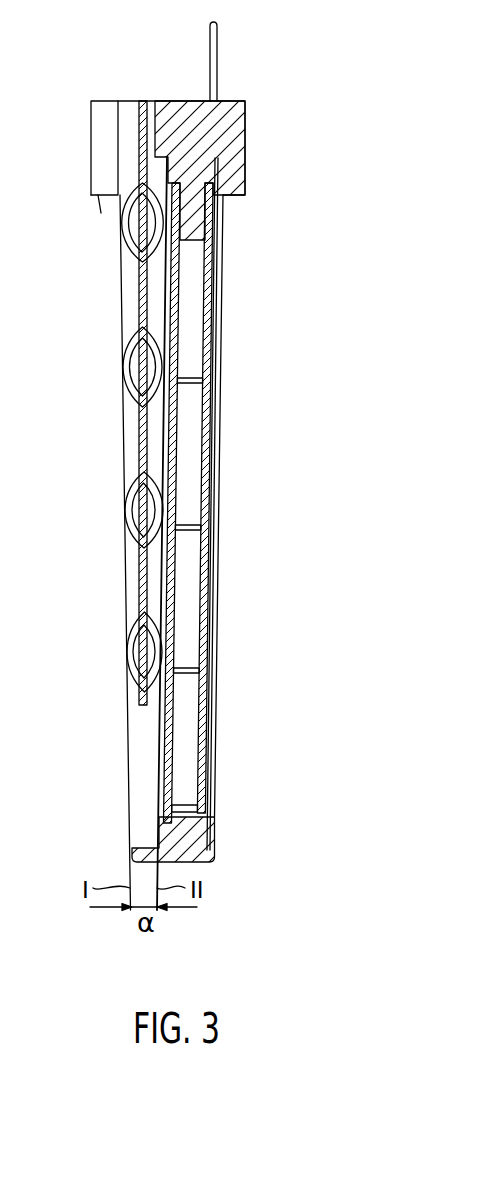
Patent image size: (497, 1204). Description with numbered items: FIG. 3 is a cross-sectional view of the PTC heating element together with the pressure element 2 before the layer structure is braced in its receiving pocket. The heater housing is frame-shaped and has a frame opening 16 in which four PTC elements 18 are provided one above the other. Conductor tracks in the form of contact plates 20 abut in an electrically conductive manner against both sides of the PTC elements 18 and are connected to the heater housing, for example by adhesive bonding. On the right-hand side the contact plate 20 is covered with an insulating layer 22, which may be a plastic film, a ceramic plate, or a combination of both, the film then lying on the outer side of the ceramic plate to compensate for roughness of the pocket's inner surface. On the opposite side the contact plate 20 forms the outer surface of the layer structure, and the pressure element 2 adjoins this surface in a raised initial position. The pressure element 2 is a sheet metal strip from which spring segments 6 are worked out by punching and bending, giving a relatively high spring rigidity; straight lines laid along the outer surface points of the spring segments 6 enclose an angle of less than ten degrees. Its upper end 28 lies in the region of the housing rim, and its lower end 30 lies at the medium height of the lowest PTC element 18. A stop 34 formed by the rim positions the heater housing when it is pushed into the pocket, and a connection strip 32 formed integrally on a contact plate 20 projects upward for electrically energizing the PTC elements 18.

The pressure element 2 is at (132, 95).
The spring segments 6 is at (133, 257).
The frame opening 16 is at (113, 474).
The PTC elements 18 is at (192, 342).
The contact plates 20 is at (172, 283).
The insulating layer 22 is at (220, 470).
The upper end 28 is at (154, 93).
The lower end 30 is at (114, 726).
The connection strips 32 is at (219, 42).
The stop 34 is at (97, 197).